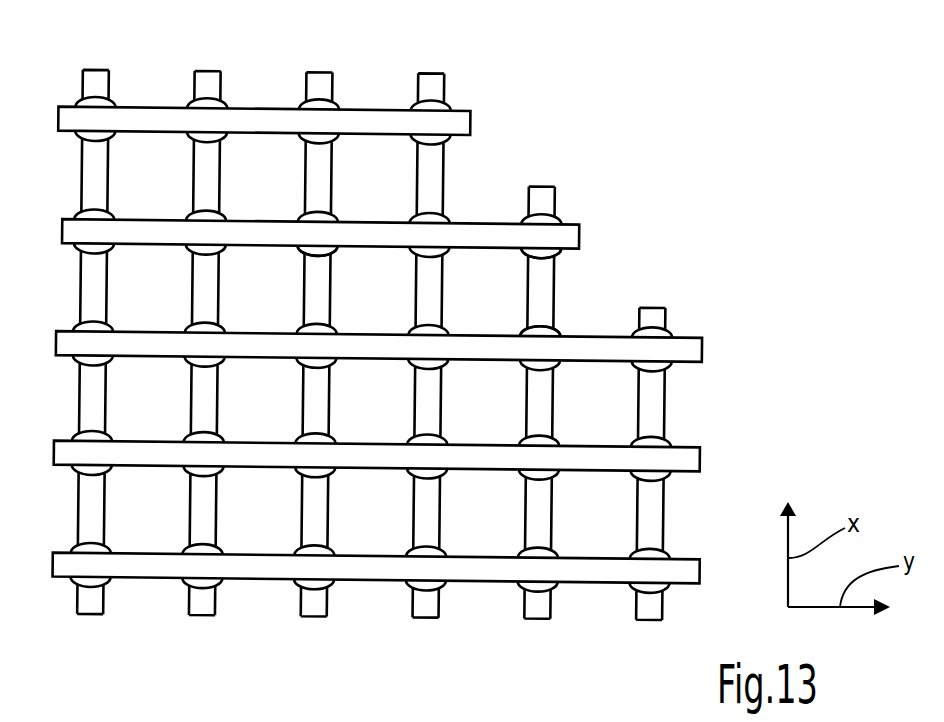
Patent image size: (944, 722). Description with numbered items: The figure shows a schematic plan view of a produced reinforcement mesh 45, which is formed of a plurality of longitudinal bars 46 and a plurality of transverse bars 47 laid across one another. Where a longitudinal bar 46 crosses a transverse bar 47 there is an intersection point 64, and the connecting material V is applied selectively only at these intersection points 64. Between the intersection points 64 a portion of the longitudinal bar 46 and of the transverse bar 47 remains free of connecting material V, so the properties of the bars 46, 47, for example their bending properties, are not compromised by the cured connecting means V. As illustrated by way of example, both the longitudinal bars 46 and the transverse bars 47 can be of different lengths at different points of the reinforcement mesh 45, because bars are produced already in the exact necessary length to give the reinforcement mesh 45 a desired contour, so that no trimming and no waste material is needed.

The reinforcement mesh 45 is at (450, 366).
The longitudinal bar 46 is at (318, 80).
The transverse bar 47 is at (470, 119).
The intersection point 64 is at (560, 208).
The connecting material V is at (318, 253).